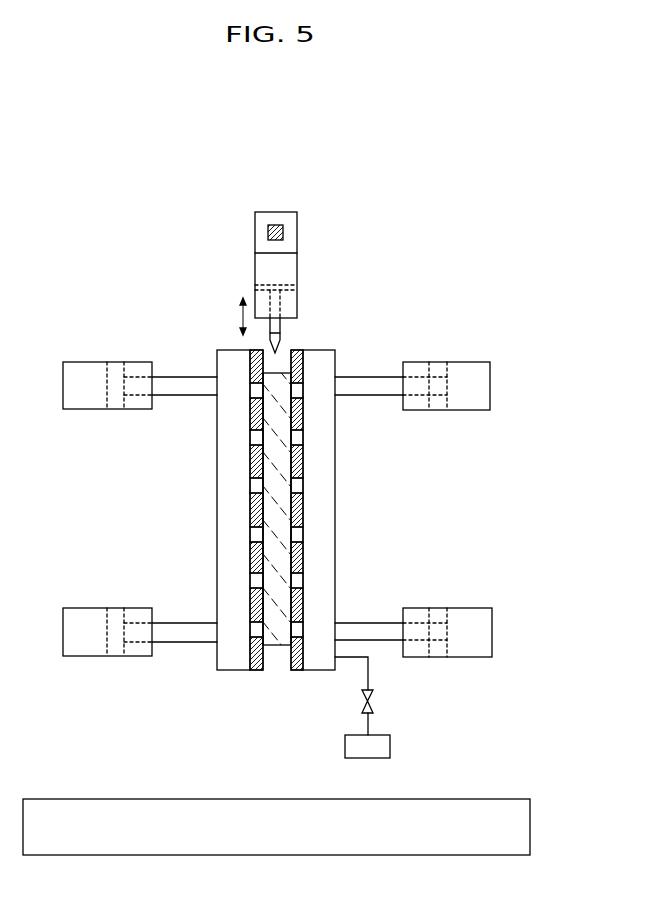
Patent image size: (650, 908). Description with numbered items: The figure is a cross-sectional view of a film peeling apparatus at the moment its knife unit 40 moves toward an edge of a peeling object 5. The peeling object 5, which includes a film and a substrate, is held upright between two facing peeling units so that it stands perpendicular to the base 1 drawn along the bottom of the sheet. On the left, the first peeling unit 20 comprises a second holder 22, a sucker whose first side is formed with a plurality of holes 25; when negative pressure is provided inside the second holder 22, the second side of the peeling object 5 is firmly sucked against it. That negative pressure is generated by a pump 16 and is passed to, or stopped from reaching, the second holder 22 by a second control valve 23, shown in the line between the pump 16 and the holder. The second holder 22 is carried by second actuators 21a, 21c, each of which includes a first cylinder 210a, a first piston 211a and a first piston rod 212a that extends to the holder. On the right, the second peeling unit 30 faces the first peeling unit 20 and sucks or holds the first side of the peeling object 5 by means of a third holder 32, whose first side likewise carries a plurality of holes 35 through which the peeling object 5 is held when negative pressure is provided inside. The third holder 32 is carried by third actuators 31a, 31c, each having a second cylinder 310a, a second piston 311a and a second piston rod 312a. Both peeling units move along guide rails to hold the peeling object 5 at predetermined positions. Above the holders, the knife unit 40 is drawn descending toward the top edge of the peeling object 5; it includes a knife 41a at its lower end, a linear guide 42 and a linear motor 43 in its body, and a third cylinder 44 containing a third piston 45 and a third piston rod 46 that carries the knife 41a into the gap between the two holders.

The base 1 is at (486, 797).
The peeling object 5 is at (275, 648).
The pump 16 is at (391, 746).
The first peeling unit 20 is at (159, 501).
The second actuator 21a is at (136, 375).
The second actuator 21c is at (100, 602).
The second holder 22 is at (232, 672).
The second control valve 23 is at (375, 702).
The holes 25 is at (258, 580).
The second peeling unit 30 is at (408, 501).
The third actuator 31a is at (430, 370).
The third actuator 31c is at (454, 603).
The third holder 32 is at (312, 672).
The holes 35 is at (297, 630).
The knife unit 40 is at (289, 262).
The knife 41a is at (285, 340).
The linear guide 42 is at (266, 232).
The linear motor 43 is at (285, 211).
The third cylinder 44 is at (298, 262).
The third piston 45 is at (255, 288).
The third piston rod 46 is at (284, 325).
The first cylinder 210a is at (88, 410).
The first piston 211a is at (120, 411).
The first piston rod 212a is at (180, 397).
The second cylinder 310a is at (472, 412).
The second piston 311a is at (437, 412).
The second piston rod 312a is at (362, 397).